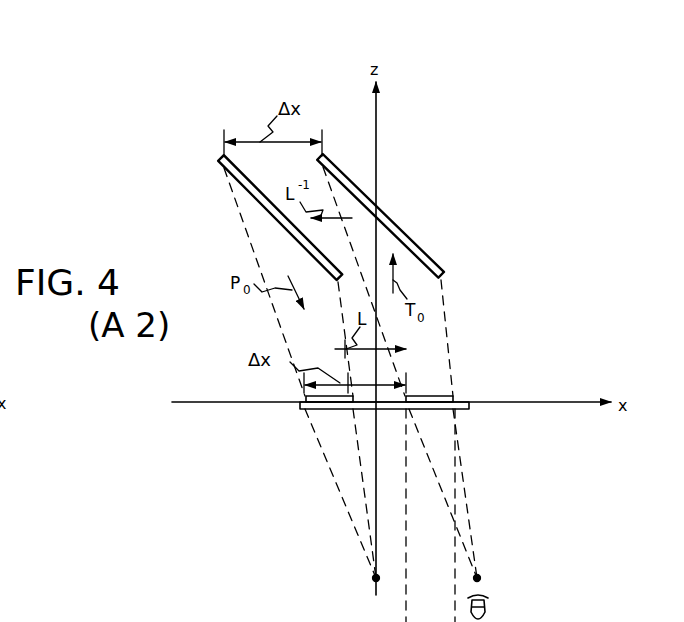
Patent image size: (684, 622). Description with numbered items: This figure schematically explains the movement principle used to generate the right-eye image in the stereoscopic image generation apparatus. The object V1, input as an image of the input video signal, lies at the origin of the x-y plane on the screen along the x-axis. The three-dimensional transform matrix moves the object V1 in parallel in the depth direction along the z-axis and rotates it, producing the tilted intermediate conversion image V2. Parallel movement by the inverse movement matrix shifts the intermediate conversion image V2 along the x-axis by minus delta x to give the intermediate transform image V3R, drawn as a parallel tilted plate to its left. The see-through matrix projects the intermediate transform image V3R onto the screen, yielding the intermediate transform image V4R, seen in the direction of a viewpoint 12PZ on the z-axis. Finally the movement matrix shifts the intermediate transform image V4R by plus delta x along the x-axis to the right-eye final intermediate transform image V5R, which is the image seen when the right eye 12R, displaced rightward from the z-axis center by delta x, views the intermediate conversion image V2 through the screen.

The intermediate transform image V3R is at (243, 184).
The intermediate conversion image V2 is at (386, 207).
The intermediate transform image V4R is at (298, 404).
The right-eye final intermediate transform image V5R is at (433, 396).
The object V1 is at (469, 409).
The pupil position 12PZ is at (373, 578).
The right eye 12R is at (480, 578).